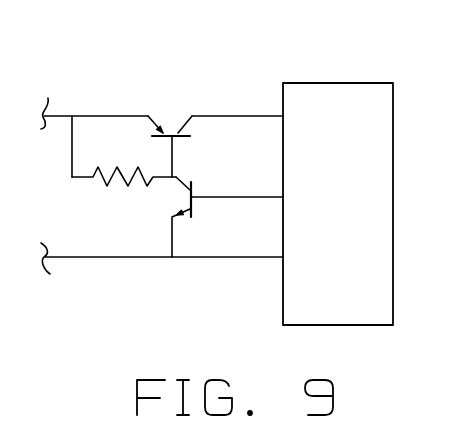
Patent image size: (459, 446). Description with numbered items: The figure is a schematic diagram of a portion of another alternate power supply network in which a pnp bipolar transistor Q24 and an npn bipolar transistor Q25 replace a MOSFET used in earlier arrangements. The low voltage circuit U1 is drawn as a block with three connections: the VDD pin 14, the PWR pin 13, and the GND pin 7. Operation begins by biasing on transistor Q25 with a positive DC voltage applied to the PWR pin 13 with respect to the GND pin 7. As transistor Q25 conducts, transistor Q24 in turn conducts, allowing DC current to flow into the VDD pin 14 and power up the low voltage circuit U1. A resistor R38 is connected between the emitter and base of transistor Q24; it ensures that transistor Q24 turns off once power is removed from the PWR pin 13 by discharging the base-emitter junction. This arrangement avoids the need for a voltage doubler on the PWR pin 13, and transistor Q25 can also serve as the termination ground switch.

The pnp bipolar transistor Q24 is at (170, 134).
The npn bipolar transistor Q25 is at (165, 217).
The resistor R38 is at (124, 164).
The low voltage circuit U1 is at (373, 83).
The VDD pin 14 is at (237, 109).
The PWR pin 13 is at (237, 189).
The GND pin 7 is at (164, 247).